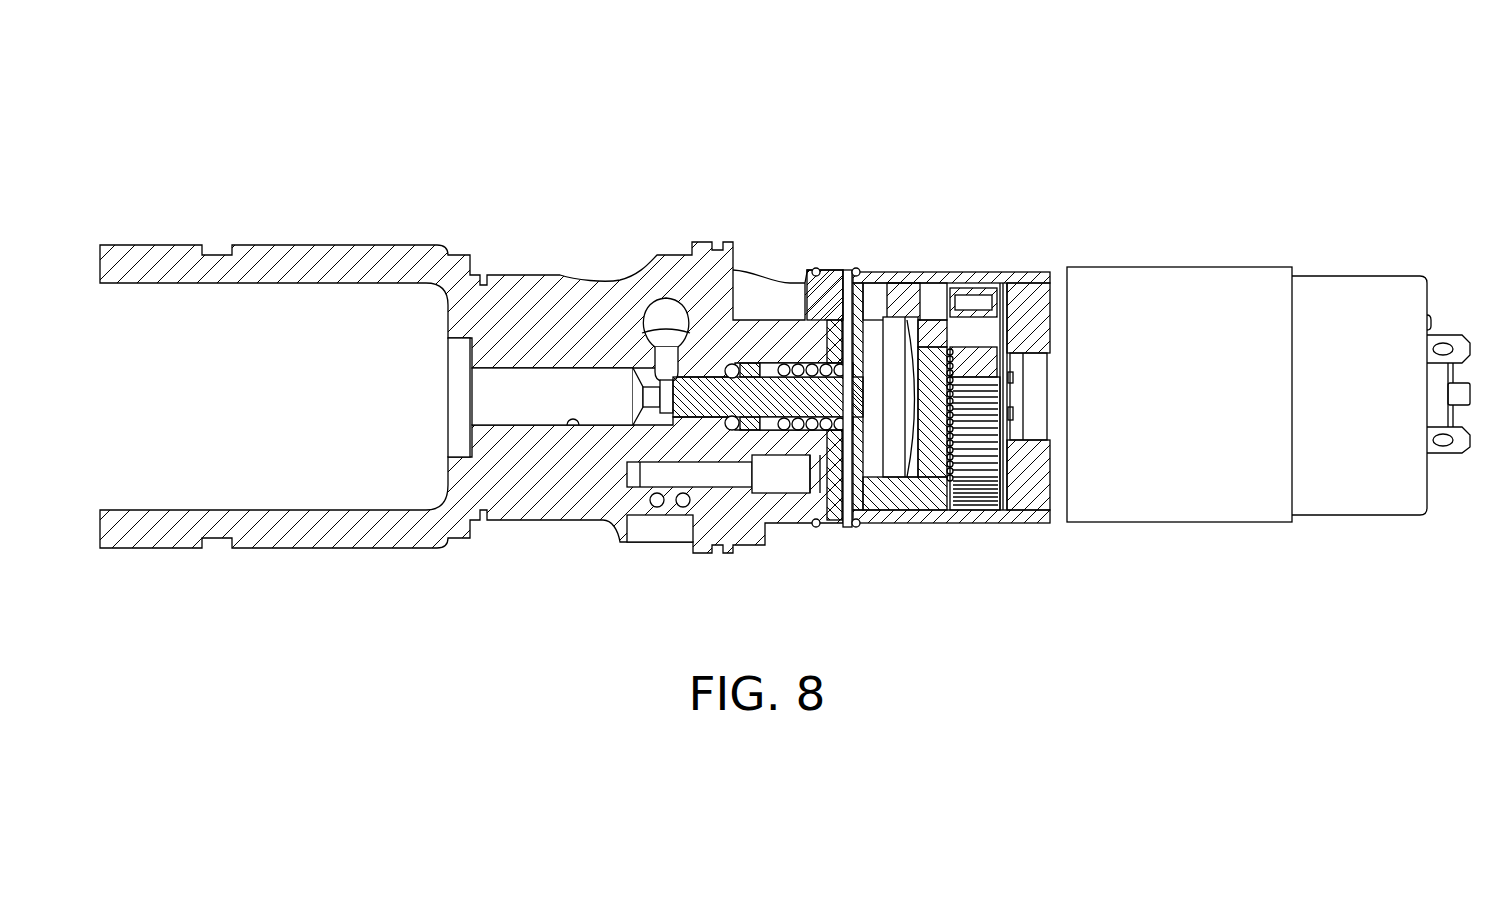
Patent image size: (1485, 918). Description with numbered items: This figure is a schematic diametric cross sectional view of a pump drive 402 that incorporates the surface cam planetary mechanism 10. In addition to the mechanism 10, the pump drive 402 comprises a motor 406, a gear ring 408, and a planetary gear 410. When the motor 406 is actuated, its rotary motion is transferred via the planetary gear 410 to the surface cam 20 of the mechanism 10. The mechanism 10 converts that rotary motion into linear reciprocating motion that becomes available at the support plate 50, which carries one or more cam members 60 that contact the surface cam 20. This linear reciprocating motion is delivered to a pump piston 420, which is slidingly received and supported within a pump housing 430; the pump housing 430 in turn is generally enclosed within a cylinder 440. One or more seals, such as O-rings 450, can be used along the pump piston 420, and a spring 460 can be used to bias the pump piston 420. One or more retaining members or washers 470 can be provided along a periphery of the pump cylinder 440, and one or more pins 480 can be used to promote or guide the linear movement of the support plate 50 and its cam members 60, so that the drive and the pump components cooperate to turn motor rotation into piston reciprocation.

The pump drive 402 is at (222, 128).
The surface cam planetary mechanism 10 is at (878, 207).
The surface cam 20 is at (938, 280).
The support plate 50 is at (830, 298).
The cam member 60 is at (890, 297).
The motor 406 is at (1241, 290).
The gear ring 408 is at (1048, 524).
The planetary gear 410 is at (983, 515).
The pump piston 420 is at (700, 377).
The pump housing 430 is at (752, 428).
The cylinder 440 is at (613, 308).
The O-ring 450 is at (730, 468).
The spring 460 is at (817, 522).
The retaining member or washer 470 is at (853, 272).
The pin 480 is at (858, 524).